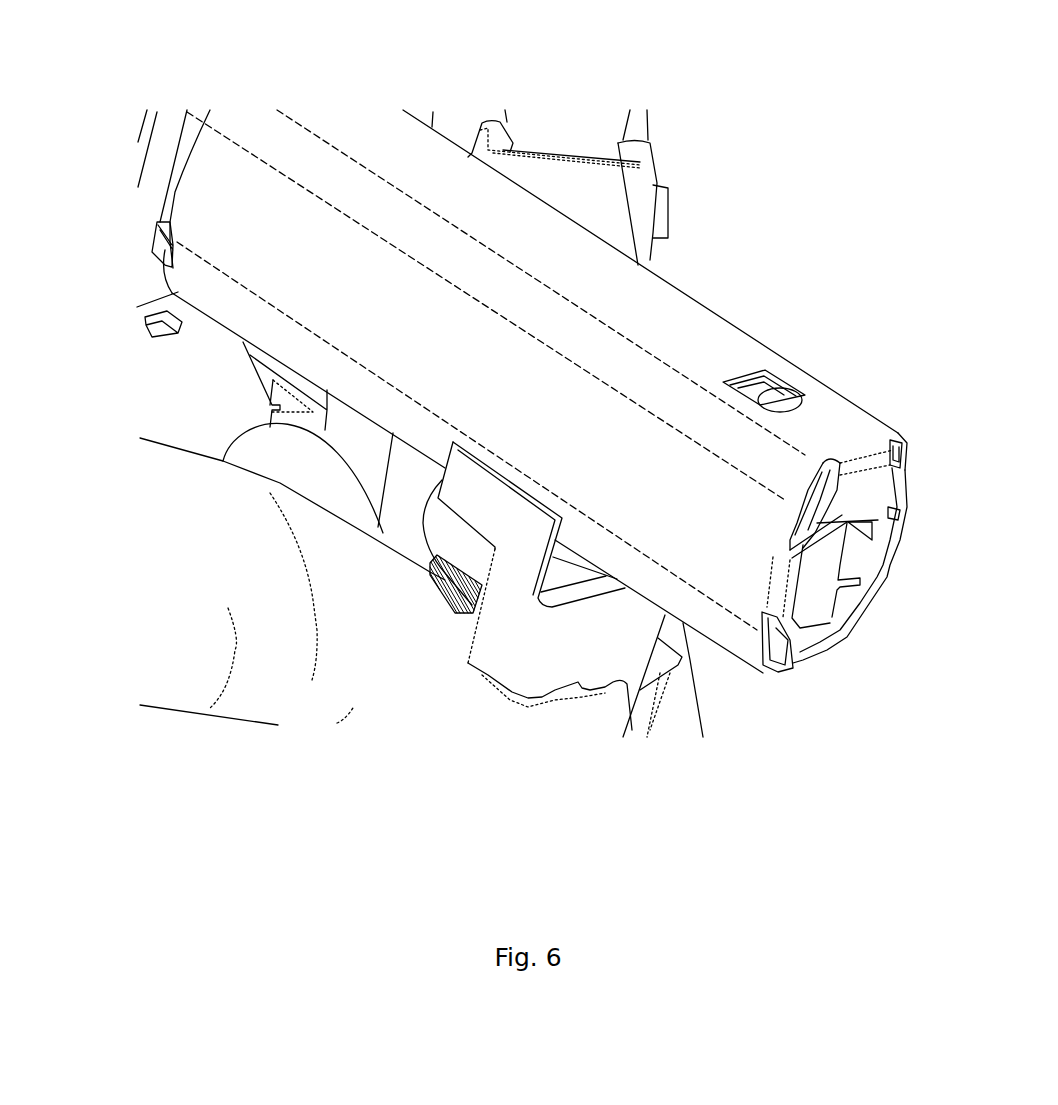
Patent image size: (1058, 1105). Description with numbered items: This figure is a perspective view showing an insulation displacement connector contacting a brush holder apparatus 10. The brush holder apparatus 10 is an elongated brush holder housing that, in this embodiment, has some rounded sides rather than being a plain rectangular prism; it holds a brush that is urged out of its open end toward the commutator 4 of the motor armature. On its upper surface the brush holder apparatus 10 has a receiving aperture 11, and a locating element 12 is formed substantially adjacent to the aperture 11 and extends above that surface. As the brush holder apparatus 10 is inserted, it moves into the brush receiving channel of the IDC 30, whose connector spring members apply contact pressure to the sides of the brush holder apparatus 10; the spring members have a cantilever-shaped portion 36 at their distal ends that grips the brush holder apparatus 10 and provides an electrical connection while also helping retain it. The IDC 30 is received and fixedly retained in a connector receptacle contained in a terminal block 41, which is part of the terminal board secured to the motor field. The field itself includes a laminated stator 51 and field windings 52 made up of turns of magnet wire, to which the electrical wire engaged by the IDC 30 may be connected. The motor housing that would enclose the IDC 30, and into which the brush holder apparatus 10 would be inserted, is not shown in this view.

The commutator 4 is at (158, 163).
The brush holder apparatus 10 is at (697, 335).
The receiving aperture 11 is at (752, 390).
The locating element 12 is at (783, 398).
The insulation displacement connector (IDC) 30 is at (540, 660).
The cantilever-shaped portion 36 is at (463, 488).
The terminal block 41 is at (600, 717).
The laminated stator 51 is at (466, 492).
The field windings 52 is at (267, 652).